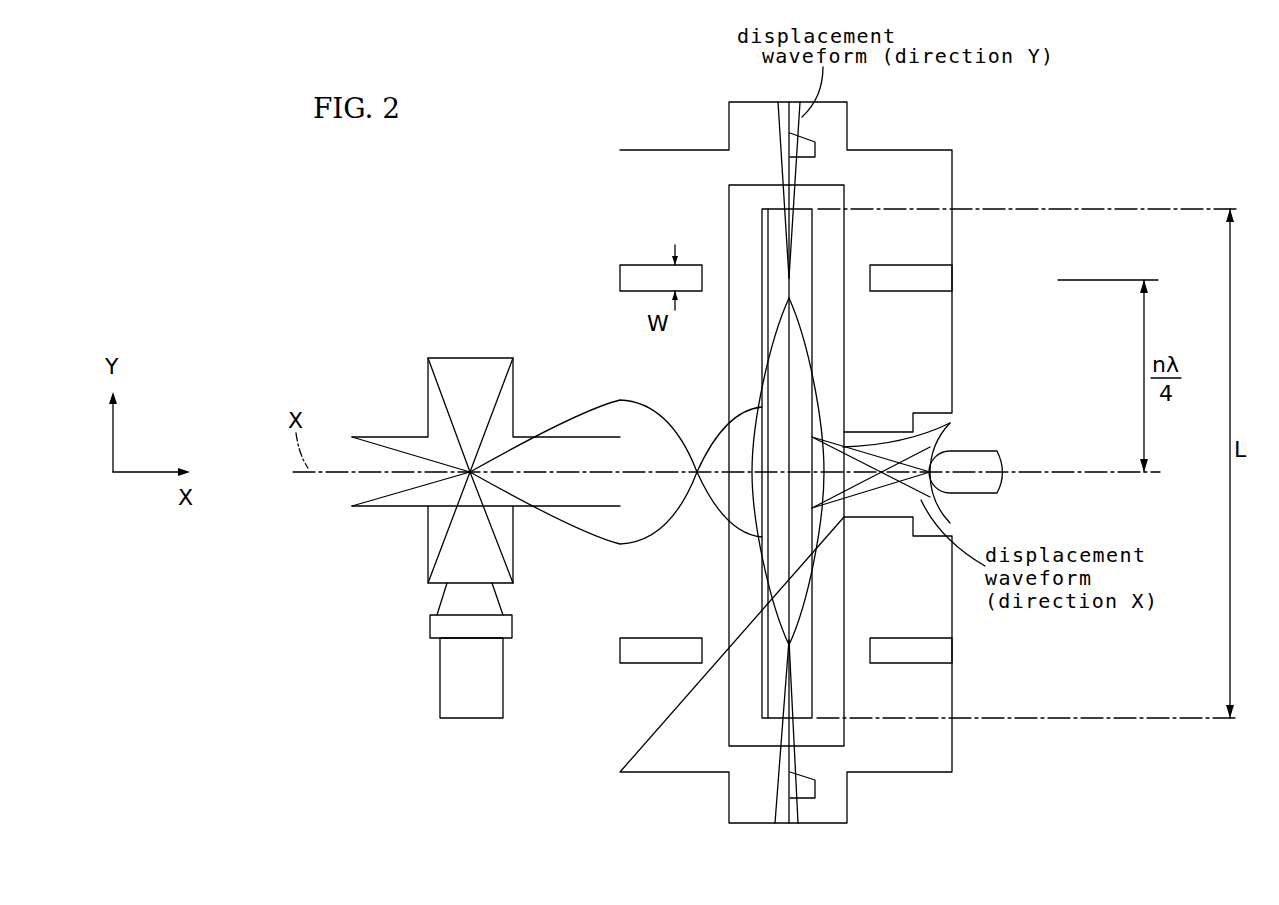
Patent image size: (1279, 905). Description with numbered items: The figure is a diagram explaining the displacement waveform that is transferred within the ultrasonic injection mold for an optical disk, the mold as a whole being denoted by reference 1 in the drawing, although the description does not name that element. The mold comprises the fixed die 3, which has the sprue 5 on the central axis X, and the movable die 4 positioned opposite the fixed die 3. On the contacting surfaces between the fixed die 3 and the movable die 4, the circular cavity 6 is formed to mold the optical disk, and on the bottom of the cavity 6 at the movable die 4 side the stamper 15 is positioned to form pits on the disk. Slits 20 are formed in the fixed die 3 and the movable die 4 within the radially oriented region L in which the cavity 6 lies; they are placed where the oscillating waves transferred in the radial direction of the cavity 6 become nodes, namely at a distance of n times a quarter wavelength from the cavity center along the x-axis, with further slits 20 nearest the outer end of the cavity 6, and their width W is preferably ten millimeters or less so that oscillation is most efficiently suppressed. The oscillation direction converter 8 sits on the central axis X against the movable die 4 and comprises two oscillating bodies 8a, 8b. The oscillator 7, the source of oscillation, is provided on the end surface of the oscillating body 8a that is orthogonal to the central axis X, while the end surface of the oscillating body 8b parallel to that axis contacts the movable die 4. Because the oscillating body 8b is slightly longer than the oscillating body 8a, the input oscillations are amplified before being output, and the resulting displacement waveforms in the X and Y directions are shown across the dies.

The optical fiber 1 is at (982, 462).
The fixed die 3 is at (948, 236).
The movable die 4 is at (632, 195).
The sprue 5 is at (945, 440).
The cavity 6 is at (805, 673).
The oscillator 7 is at (440, 685).
The oscillation direction converter 8 is at (357, 483).
The oscillating body 8a is at (508, 543).
The oscillating body 8b is at (541, 453).
The stamper 15 is at (763, 675).
The slits 20 is at (628, 270).